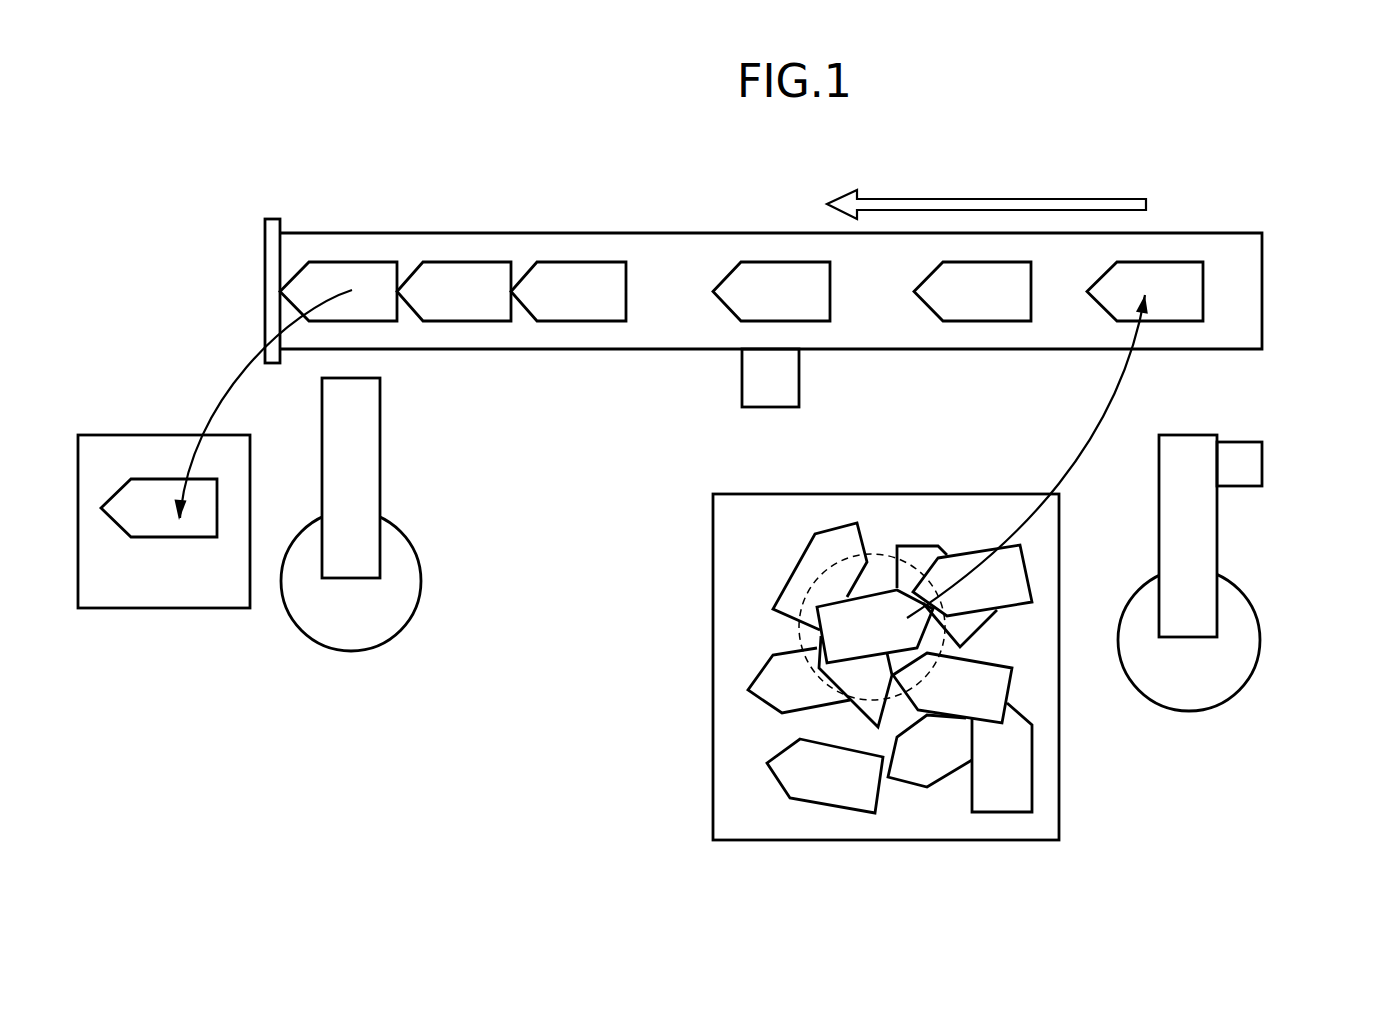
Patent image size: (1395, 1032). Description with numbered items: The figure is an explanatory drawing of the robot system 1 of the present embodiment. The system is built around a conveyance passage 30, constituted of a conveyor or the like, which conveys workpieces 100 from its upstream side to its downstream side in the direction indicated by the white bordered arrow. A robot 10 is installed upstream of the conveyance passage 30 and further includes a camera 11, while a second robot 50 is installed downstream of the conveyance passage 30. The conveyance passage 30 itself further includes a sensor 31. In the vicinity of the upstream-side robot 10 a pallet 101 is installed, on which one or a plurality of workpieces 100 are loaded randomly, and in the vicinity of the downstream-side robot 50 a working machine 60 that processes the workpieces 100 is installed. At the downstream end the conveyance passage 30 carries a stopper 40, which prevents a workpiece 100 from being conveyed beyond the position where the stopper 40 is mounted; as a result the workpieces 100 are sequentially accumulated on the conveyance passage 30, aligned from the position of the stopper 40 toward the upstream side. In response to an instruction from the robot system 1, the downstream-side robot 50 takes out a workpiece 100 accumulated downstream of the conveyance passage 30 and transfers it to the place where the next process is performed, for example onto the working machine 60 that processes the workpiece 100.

The robot system 1 is at (1314, 181).
The robot 10 is at (1243, 650).
The camera 11 is at (1247, 463).
The conveyance passage 30 is at (683, 232).
The sensor 31 is at (742, 377).
The stopper 40 is at (265, 278).
The robot 50 is at (359, 634).
The working machine 60 is at (132, 609).
The workpiece 100 is at (843, 782).
The pallet 101 is at (949, 696).